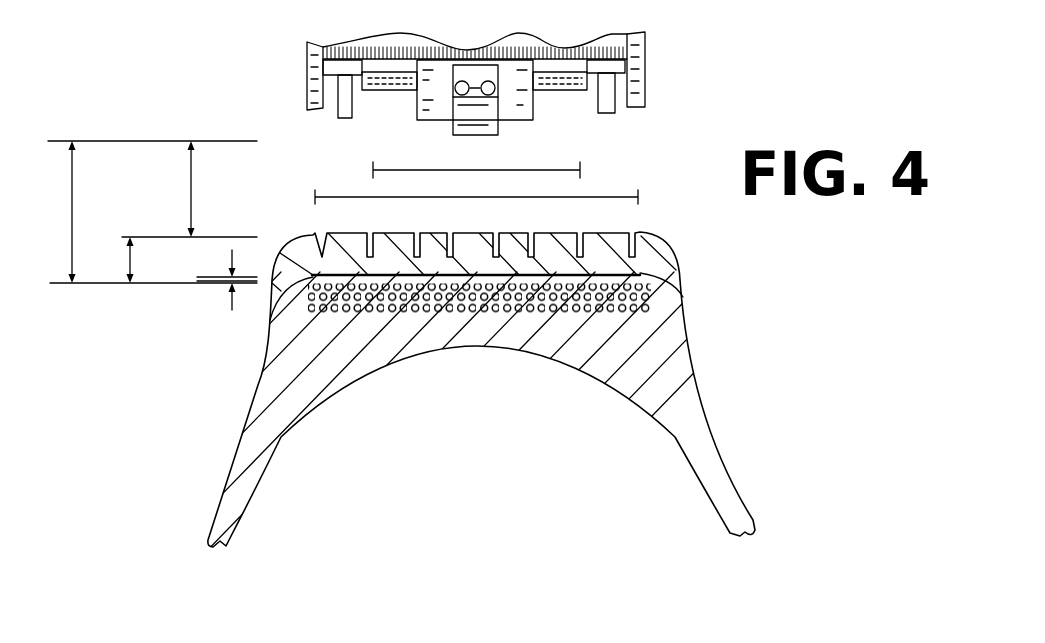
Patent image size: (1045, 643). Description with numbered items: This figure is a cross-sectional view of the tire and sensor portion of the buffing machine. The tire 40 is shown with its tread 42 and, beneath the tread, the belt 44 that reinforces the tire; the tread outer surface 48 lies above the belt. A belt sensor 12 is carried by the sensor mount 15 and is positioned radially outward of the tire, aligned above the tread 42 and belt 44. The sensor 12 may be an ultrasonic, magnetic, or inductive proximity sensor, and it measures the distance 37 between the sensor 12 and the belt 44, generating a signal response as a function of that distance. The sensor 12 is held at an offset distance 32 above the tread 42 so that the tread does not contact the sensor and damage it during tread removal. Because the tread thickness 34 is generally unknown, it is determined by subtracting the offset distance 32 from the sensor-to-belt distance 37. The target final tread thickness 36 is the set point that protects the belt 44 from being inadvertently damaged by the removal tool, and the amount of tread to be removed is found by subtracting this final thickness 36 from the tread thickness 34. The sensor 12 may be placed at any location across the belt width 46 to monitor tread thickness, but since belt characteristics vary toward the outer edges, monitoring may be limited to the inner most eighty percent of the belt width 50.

The sensor mount 15 is at (662, 54).
The belt sensor 12 is at (485, 138).
The inner most 80% of the belt width 50 is at (373, 170).
The belt width 46 is at (330, 194).
The distance between the sensor and the belt 37 is at (71, 213).
The offset distance 32 is at (190, 210).
The tread thickness 34 is at (129, 255).
The target final tread thickness 36 is at (232, 301).
The tire 40 is at (222, 389).
The tread 42 is at (644, 259).
The belt 44 is at (652, 297).
The tread outer surface 48 is at (608, 231).